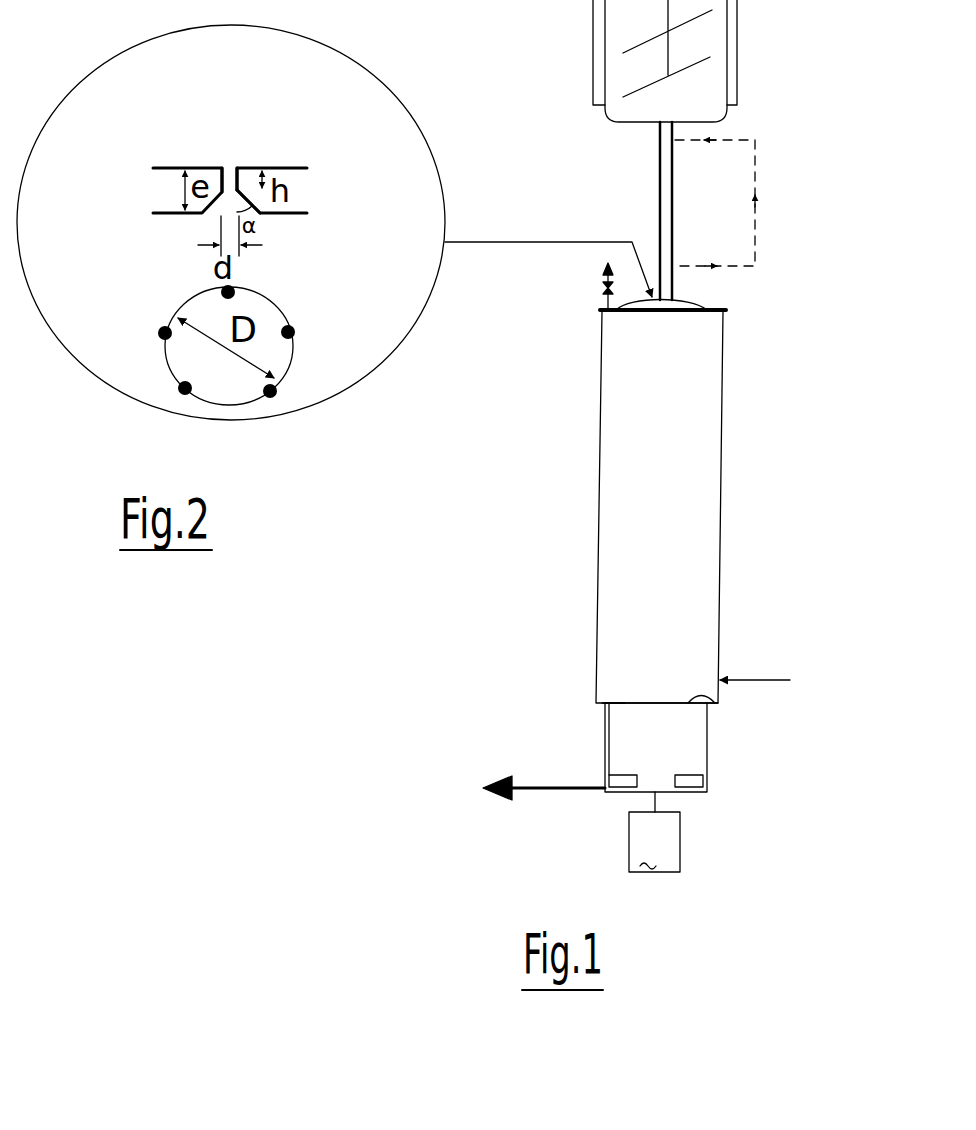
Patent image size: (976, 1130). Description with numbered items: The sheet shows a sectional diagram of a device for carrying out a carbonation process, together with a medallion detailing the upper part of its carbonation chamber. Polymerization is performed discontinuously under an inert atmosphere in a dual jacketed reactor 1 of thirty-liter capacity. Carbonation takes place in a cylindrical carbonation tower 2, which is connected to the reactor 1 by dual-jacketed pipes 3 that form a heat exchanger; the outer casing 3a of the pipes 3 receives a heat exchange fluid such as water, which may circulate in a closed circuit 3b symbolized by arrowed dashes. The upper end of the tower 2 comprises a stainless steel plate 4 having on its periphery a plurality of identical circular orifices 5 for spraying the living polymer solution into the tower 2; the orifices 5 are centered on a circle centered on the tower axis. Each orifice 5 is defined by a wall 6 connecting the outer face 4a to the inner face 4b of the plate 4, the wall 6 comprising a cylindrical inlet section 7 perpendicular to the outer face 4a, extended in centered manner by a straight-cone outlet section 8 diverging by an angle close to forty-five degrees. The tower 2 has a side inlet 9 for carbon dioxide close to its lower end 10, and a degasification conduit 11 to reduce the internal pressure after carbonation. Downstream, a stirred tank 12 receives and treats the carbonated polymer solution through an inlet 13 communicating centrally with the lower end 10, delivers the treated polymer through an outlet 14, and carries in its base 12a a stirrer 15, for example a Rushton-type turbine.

In FIG. 1, the dual jacketed reactor 1 is at (748, 42).
In FIG. 1, the carbonation tower 2 is at (736, 535).
In FIG. 1, the dual-jacketed pipes 3 is at (678, 290).
In FIG. 1, the outer casing 3a is at (660, 199).
In FIG. 1, the closed circuit 3b is at (757, 167).
In FIG. 2, the plate 4 is at (221, 387).
In FIG. 1, the plate 4 is at (670, 312).
In FIG. 2, the outer face 4a is at (163, 166).
In FIG. 2, the inner face 4b is at (163, 216).
In FIG. 2, the orifices 5 is at (230, 165).
In FIG. 2, the wall 6 is at (237, 172).
In FIG. 2, the cylindrical inlet section 7 is at (222, 183).
In FIG. 2, the outlet section 8 is at (257, 205).
In FIG. 1, the side inlet 9 is at (772, 681).
In FIG. 1, the lower end 10 is at (720, 702).
In FIG. 1, the degasification conduit 11 is at (600, 287).
In FIG. 1, the stirred tank 12 is at (707, 757).
In FIG. 1, the base 12a is at (687, 793).
In FIG. 1, the inlet 13 is at (627, 706).
In FIG. 1, the outlet 14 is at (567, 793).
In FIG. 1, the stirrer 15 is at (654, 832).